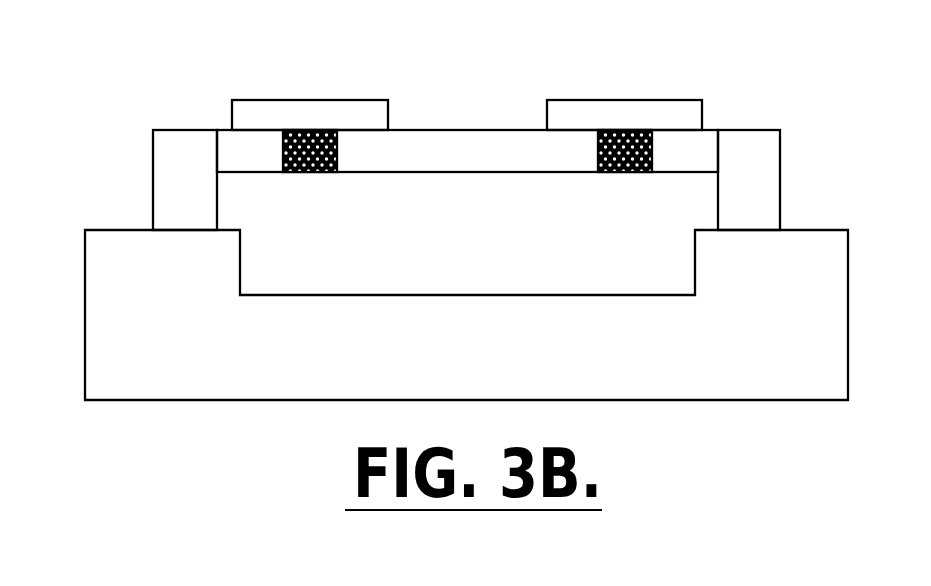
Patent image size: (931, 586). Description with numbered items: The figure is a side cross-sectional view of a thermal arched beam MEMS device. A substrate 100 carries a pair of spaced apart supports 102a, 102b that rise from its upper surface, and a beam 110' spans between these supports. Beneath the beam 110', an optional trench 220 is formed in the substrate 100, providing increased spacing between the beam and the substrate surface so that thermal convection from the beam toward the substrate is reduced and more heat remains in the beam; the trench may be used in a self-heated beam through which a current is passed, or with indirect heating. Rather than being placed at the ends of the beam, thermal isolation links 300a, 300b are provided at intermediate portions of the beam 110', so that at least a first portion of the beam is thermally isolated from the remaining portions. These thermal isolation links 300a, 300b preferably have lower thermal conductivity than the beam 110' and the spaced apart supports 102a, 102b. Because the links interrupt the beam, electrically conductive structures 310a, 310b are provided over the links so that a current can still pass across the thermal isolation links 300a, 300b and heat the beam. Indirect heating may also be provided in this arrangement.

The substrate 100 is at (493, 377).
The trench 220 is at (493, 278).
The spaced apart support 102a is at (131, 156).
The spaced apart support 102b is at (802, 157).
The beam 110' is at (467, 98).
The electrically conductive structure 310a is at (280, 87).
The electrically conductive structure 310b is at (653, 87).
The thermal isolation link 300a is at (347, 174).
The thermal isolation link 300b is at (590, 173).